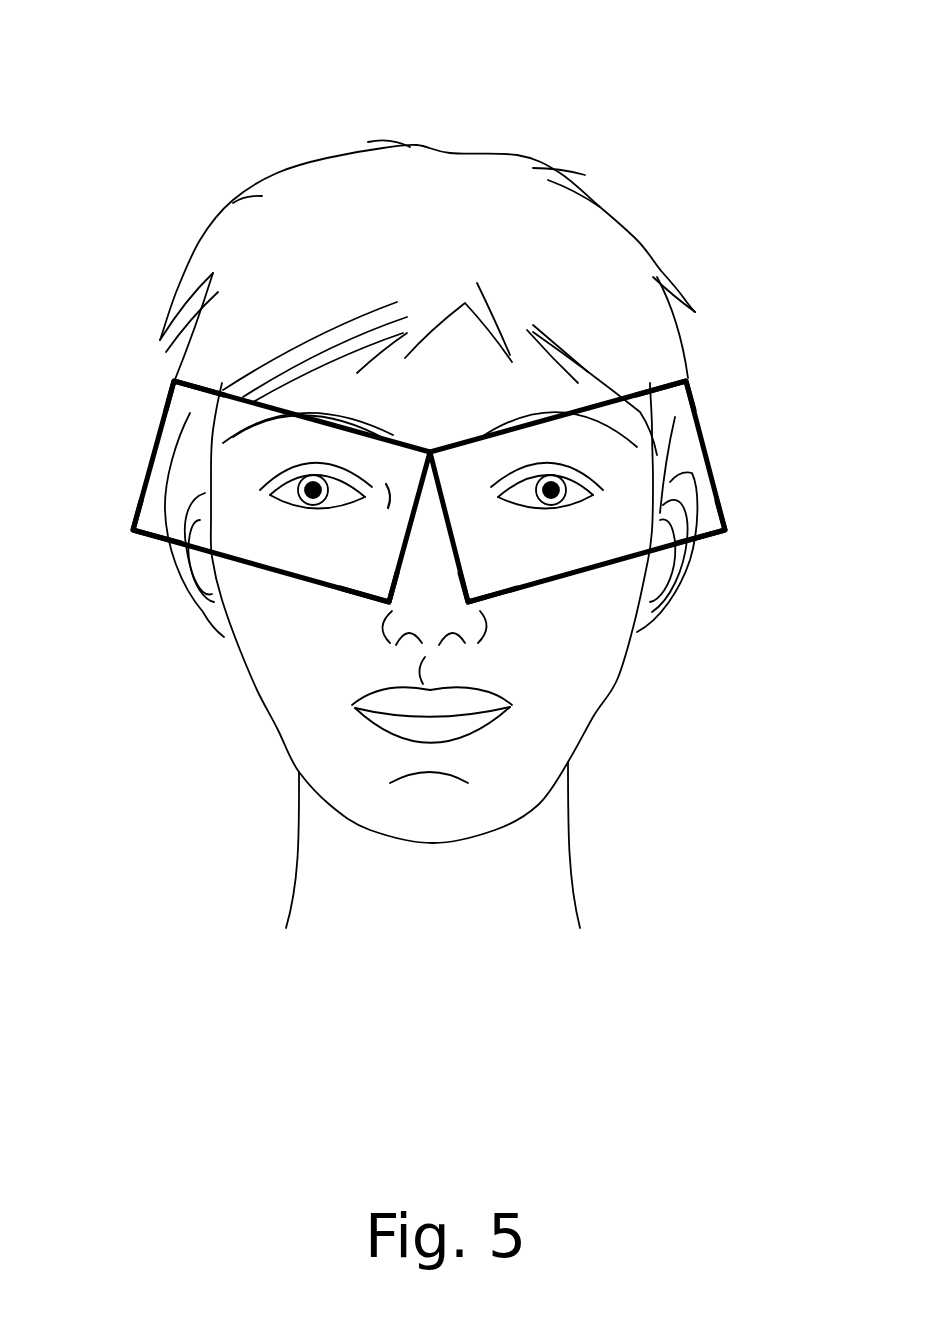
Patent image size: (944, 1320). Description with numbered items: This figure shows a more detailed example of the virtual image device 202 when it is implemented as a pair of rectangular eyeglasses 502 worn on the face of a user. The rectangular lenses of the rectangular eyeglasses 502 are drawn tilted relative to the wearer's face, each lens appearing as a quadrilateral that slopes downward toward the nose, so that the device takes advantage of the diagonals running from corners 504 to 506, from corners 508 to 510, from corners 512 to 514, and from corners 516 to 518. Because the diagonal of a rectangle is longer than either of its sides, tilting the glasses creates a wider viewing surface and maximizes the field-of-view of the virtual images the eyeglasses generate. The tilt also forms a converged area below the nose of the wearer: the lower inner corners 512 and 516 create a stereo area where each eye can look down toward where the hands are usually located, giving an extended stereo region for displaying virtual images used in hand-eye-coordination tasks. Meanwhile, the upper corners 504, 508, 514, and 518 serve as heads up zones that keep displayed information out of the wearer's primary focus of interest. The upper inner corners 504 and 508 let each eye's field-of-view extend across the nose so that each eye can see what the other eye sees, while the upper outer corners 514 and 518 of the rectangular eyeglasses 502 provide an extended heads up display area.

The virtual image device 202 is at (128, 60).
The rectangular eyeglasses 502 is at (733, 414).
The corner 504 is at (432, 450).
The corner 508 is at (430, 450).
The corner 506 is at (725, 530).
The corner 510 is at (133, 530).
The corner 512 is at (468, 602).
The corner 514 is at (686, 381).
The corner 516 is at (389, 602).
The corner 518 is at (174, 381).